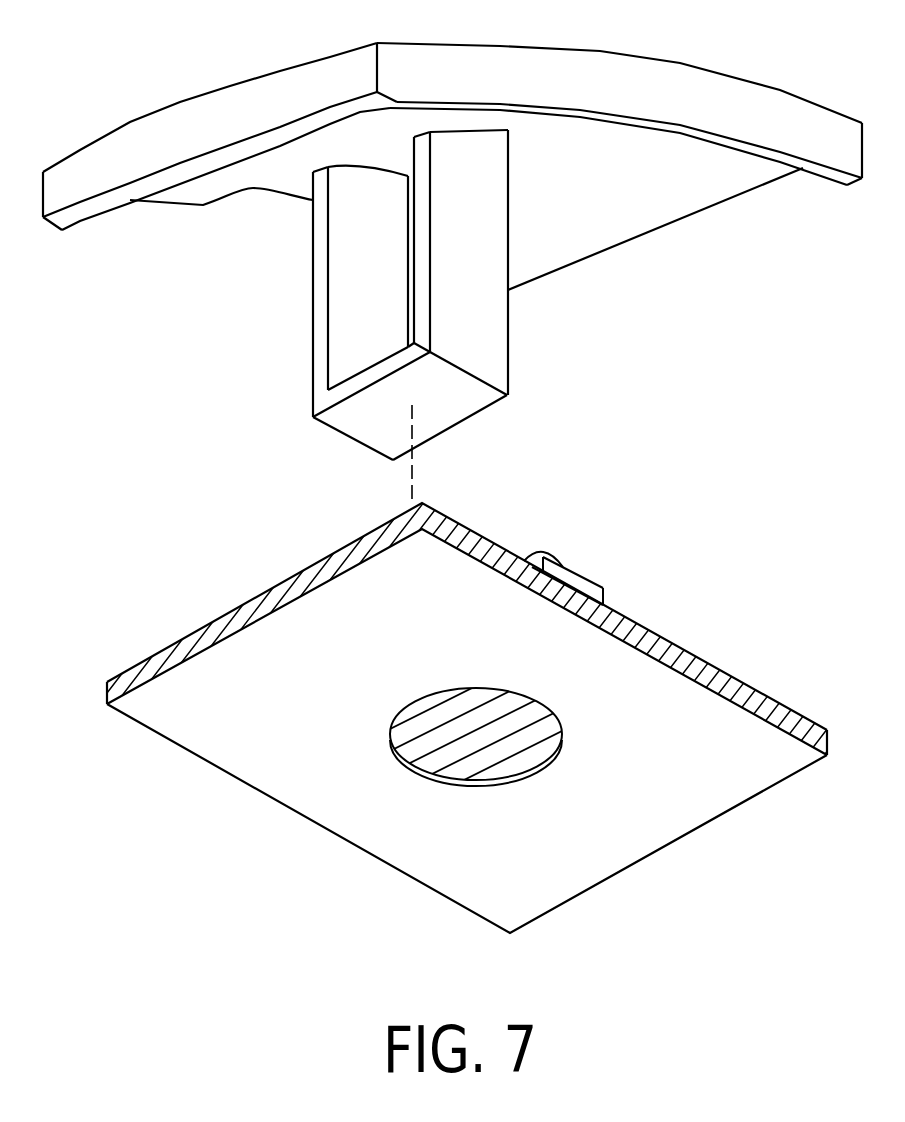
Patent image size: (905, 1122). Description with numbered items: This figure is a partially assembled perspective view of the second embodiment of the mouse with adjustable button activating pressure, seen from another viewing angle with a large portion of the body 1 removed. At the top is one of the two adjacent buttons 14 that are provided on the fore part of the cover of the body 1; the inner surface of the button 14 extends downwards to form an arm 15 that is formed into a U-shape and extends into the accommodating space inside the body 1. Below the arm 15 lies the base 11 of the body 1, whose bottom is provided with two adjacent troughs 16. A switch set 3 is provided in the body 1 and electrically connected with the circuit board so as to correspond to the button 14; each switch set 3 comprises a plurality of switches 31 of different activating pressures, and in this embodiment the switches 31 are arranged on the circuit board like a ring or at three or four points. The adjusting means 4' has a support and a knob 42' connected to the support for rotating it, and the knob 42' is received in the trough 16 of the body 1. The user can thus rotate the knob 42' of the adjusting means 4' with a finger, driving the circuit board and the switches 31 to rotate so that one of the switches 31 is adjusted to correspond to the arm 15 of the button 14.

The body 1 is at (452, 700).
The base 11 is at (743, 693).
The switch set 3 is at (608, 536).
The switch 31 is at (562, 556).
The button 14 is at (763, 102).
The arm 15 is at (485, 313).
The adjusting means 4' is at (476, 738).
The knob 42' is at (470, 738).
The trough 16 is at (497, 780).